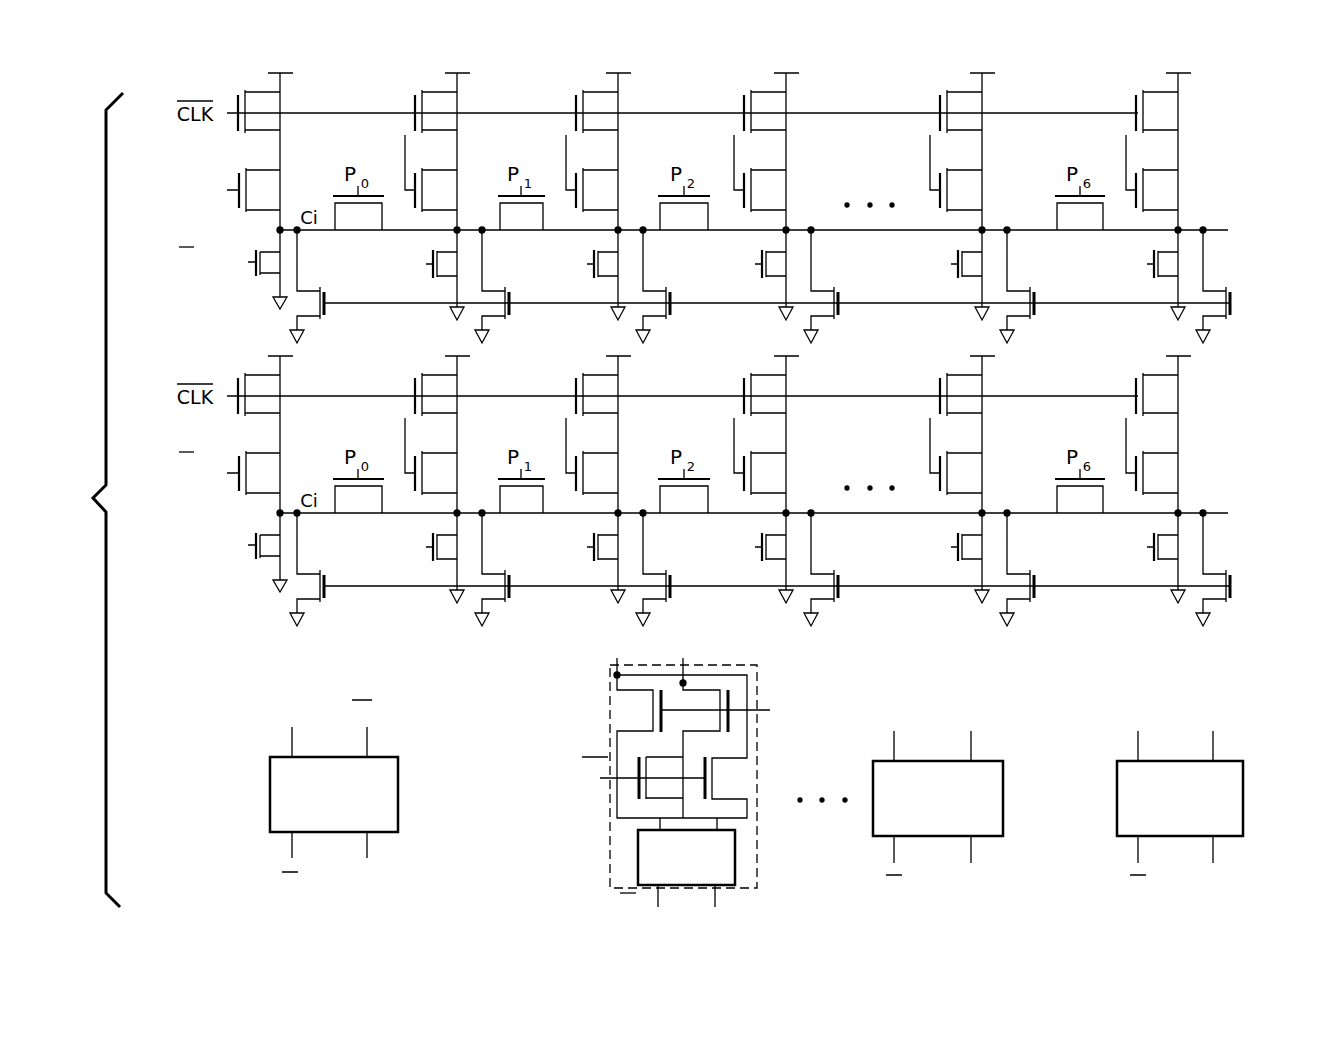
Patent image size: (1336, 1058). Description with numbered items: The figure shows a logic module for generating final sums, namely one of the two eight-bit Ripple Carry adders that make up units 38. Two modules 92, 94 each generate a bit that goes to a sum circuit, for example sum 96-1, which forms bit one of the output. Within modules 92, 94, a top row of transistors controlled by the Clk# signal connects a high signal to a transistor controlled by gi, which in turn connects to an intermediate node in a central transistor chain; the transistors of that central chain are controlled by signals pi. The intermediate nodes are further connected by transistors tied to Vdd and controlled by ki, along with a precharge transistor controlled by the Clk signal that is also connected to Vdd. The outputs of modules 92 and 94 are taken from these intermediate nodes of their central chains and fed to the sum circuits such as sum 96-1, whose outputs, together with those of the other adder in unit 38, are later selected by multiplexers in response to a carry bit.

The units 38 is at (218, 618).
The module 92 is at (1240, 193).
The module 94 is at (1240, 474).
The sum 96-1 is at (783, 688).